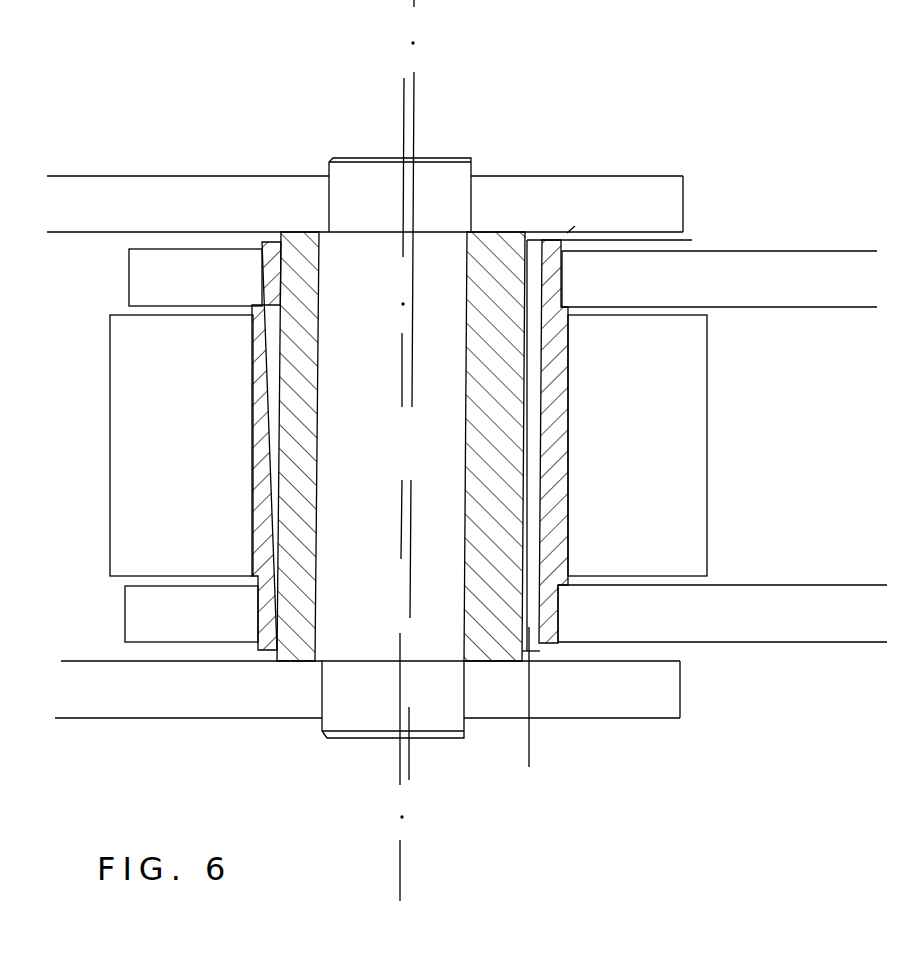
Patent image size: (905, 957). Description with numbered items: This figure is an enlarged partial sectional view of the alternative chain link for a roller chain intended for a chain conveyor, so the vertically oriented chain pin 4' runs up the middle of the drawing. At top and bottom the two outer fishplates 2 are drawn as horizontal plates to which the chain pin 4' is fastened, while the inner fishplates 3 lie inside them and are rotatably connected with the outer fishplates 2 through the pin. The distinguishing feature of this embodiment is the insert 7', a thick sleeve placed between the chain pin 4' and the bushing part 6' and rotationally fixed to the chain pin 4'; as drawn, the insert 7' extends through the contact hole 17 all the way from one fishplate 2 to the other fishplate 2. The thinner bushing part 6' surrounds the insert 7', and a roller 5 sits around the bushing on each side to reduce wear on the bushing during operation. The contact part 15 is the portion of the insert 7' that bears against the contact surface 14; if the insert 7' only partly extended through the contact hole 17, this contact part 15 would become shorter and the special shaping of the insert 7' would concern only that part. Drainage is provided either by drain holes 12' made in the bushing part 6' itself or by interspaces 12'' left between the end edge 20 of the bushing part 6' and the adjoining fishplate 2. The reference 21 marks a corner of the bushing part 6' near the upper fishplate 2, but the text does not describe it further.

The outer fishplate 2 is at (558, 195).
The inner fishplate 3 is at (198, 296).
The chain pin 4' is at (354, 446).
The roller 5 is at (178, 438).
The bushing part 6' is at (415, 445).
The insert 7' is at (401, 446).
The drain hole 12' is at (669, 682).
The interspace 12'' is at (675, 200).
The contact surface 14 is at (280, 556).
The contact part 15 is at (285, 600).
The contact hole 17 is at (539, 720).
The end edge 20 is at (545, 236).
The edge 21 is at (270, 247).